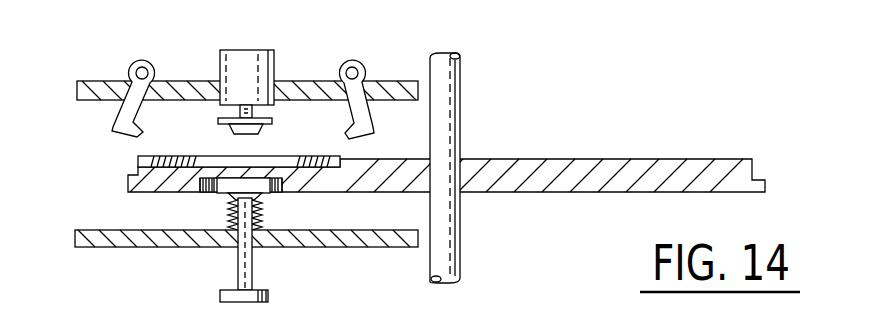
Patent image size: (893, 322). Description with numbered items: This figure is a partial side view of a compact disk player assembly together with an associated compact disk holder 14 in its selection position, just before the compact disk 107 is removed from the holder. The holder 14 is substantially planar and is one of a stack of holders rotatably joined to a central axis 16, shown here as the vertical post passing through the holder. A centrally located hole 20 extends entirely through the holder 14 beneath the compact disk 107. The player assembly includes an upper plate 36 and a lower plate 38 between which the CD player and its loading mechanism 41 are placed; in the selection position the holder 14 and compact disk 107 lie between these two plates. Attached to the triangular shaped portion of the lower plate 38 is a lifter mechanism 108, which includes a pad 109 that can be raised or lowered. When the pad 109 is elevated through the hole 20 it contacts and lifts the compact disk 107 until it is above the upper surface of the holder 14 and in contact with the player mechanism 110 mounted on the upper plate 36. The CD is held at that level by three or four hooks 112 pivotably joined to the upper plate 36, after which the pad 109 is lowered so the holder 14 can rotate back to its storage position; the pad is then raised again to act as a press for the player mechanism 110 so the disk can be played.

The compact disk holder 14 is at (600, 155).
The central axis 16 is at (450, 113).
The hole 20 is at (213, 194).
The upper plate 36 is at (85, 80).
The lower plate 38 is at (102, 248).
The loading mechanism 41 is at (183, 207).
The compact disk 107 is at (167, 157).
The lifter mechanism 108 is at (240, 252).
The pad 109 is at (272, 190).
The player mechanism 110 is at (273, 122).
The hook 112 is at (396, 84).